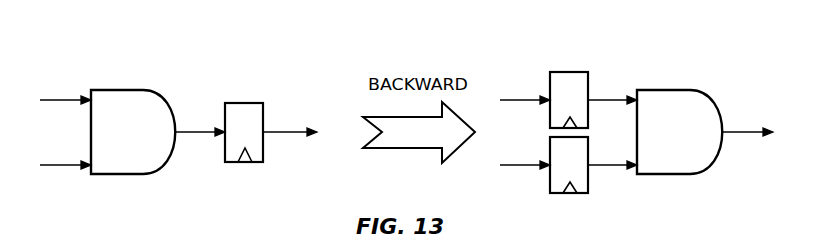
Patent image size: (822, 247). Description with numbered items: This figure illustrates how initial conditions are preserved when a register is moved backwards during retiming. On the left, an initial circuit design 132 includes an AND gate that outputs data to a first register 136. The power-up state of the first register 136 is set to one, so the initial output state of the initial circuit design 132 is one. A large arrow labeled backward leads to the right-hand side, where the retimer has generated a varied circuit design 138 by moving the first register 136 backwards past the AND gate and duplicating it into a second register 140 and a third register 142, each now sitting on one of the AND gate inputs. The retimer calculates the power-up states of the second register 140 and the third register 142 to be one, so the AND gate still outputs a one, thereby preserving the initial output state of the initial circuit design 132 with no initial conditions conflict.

The initial circuit design 132 is at (190, 107).
The first register 136 is at (245, 103).
The varied circuit design 138 is at (649, 122).
The second register 140 is at (572, 72).
The third register 142 is at (570, 193).